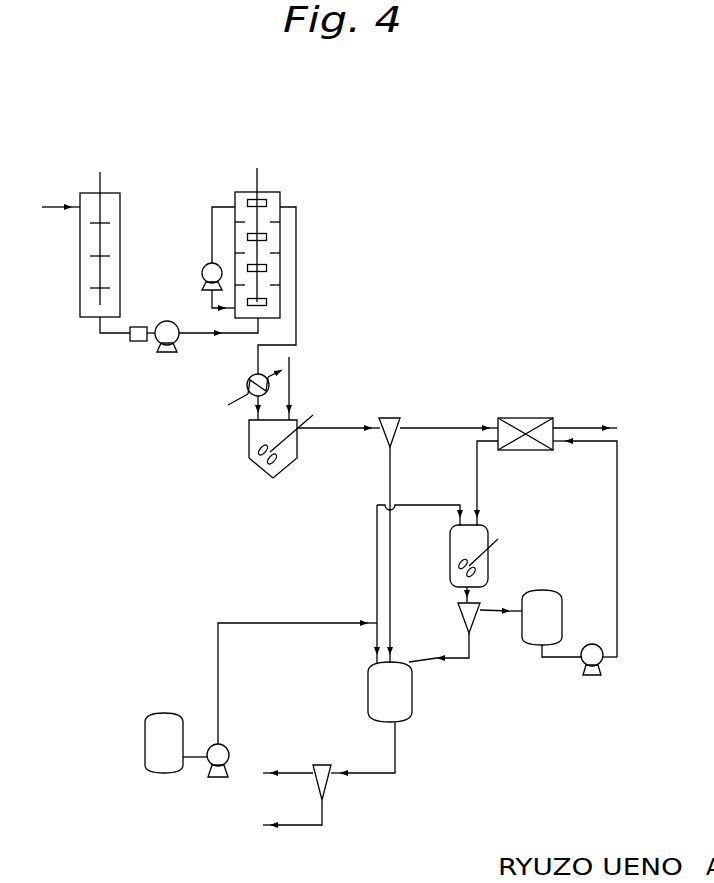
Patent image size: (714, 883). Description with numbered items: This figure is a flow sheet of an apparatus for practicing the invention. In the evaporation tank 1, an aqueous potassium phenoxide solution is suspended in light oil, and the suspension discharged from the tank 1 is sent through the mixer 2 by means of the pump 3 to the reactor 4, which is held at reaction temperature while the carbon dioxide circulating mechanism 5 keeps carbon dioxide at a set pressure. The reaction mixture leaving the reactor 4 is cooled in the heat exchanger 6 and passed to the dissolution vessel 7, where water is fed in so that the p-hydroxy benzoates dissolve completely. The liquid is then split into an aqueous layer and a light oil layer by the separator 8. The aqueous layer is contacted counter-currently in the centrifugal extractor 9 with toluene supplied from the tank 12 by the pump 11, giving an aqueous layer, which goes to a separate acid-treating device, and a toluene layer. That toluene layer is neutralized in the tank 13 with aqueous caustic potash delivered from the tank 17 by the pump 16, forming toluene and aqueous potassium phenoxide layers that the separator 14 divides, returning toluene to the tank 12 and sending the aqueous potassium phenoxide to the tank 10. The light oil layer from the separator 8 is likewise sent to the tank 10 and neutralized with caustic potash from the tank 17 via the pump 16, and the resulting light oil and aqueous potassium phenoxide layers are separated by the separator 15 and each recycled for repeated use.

The evaporation tank 1 is at (106, 197).
The mixer 2 is at (136, 341).
The pump 3 is at (165, 330).
The reactor 4 is at (268, 200).
The carbon dioxide circulating mechanism 5 is at (214, 205).
The heat exchanger 6 is at (247, 385).
The dissolution vessel 7 is at (292, 424).
The separator 8 is at (392, 421).
The centrifugal extractor 9 is at (526, 418).
The tank 10 is at (407, 688).
The pump 11 is at (597, 657).
The tank 12 is at (548, 600).
The tank 13 is at (478, 535).
The separator 14 is at (478, 606).
The separator 15 is at (318, 766).
The pump 16 is at (222, 752).
The tank 17 is at (153, 730).